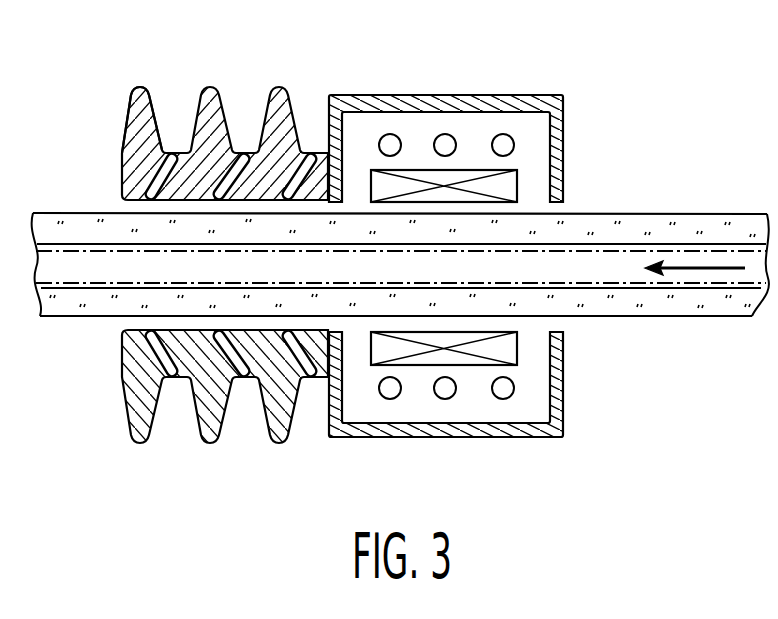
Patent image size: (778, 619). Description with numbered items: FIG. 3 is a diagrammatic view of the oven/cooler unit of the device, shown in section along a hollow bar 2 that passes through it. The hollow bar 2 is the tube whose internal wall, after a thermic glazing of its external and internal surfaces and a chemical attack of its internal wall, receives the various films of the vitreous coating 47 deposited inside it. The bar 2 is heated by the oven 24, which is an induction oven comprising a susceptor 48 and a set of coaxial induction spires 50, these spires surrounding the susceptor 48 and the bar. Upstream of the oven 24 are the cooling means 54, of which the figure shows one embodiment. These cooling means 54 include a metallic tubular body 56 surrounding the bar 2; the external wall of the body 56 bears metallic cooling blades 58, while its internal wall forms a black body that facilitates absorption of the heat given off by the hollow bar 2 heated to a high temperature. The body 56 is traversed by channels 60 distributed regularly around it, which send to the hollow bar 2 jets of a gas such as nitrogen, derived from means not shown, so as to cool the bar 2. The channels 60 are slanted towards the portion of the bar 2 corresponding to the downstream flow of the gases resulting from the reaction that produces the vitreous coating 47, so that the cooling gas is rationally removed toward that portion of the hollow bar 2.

The hollow bar 2 is at (672, 313).
The oven 24 is at (527, 100).
The vitreous coating 47 is at (612, 253).
The susceptor 48 is at (507, 187).
The coaxial induction spires 50 is at (514, 145).
The cooling means 54 is at (206, 283).
The metallic tubular body 56 is at (279, 156).
The metallic cooling blades 58 is at (140, 88).
The channels 60 is at (303, 372).